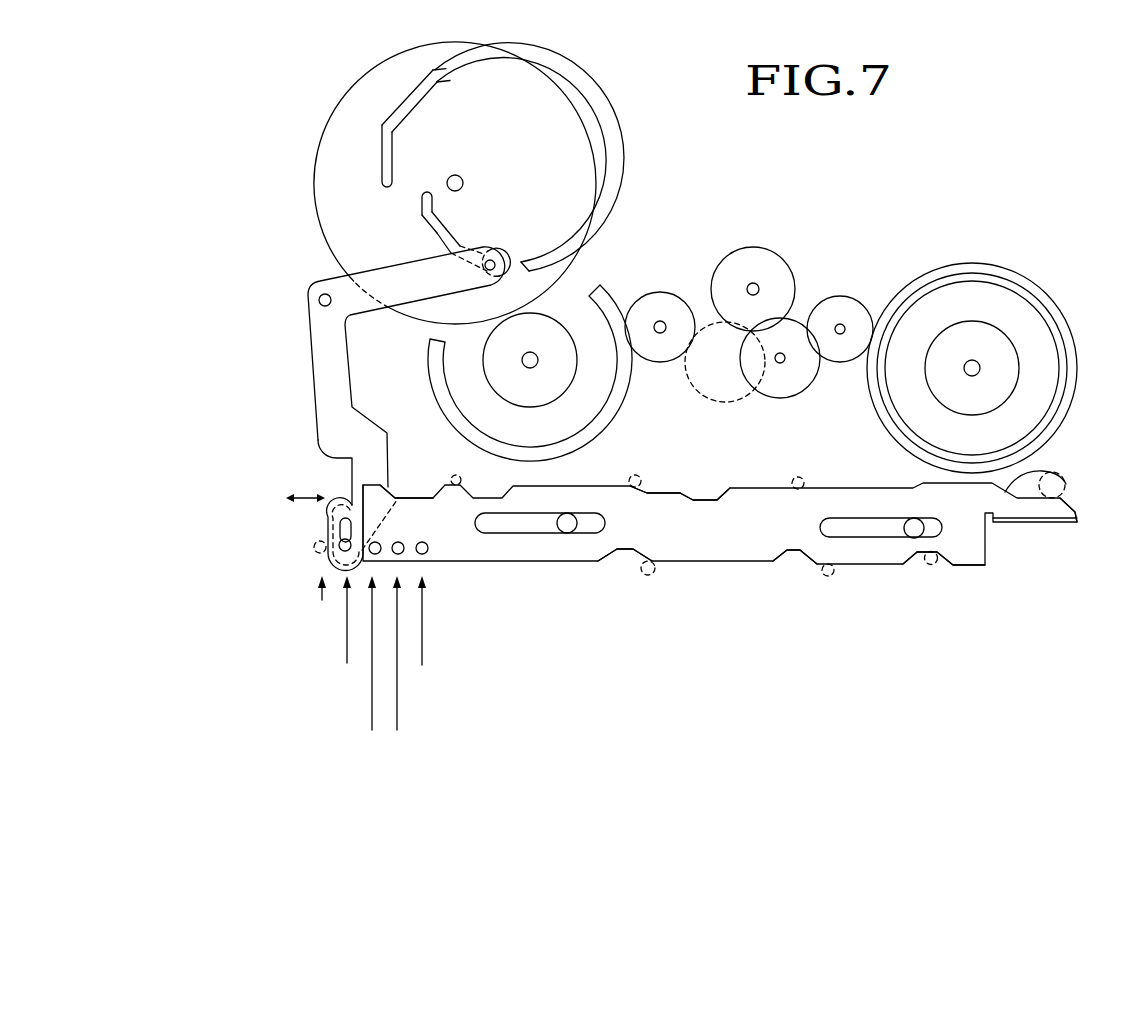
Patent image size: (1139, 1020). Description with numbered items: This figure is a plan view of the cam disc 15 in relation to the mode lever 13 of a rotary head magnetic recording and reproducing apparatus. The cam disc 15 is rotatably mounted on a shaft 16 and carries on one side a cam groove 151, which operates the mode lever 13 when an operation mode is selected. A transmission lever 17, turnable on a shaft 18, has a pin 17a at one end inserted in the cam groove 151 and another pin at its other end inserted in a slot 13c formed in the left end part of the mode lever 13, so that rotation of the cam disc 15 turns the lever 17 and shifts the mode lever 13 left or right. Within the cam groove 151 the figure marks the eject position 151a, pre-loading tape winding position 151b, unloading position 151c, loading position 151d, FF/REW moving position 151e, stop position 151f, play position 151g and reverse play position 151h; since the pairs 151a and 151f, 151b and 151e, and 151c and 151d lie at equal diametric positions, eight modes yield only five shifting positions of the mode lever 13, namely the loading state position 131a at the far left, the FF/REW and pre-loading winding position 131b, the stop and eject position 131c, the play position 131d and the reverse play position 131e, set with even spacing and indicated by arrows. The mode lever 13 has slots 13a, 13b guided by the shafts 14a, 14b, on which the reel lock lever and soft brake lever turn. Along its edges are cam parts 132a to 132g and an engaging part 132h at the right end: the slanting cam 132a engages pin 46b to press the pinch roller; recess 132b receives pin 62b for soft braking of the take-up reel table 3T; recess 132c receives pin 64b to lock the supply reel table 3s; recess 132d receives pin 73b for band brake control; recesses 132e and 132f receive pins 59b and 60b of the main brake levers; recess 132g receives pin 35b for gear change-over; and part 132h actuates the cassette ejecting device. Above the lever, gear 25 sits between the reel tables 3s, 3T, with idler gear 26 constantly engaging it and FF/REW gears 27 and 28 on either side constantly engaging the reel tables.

The cam disc 15 is at (518, 78).
The cam groove 151 is at (563, 122).
The eject position 151a is at (382, 184).
The pre-loading tape winding position 151b is at (385, 127).
The unloading position 151c is at (433, 72).
The loading position 151d is at (522, 268).
The FF/REW moving position 151e is at (503, 252).
The stop position 151f is at (456, 249).
The play position 151g is at (424, 230).
The reverse play position 151h is at (422, 198).
The shaft 16 is at (447, 181).
The lever 17 is at (318, 348).
The pin 17a is at (339, 535).
The shaft 18 is at (319, 300).
The mode lever 13 is at (984, 566).
The slot 13a is at (505, 527).
The slot 13b is at (830, 519).
The slot 13c is at (347, 519).
The shaft 14a is at (567, 530).
The shaft 14b is at (913, 537).
The supply reel table 3s is at (432, 376).
The take-up reel table 3T is at (997, 300).
The gear 25 is at (765, 265).
The idler gear 26 is at (790, 335).
The FF/REW gear 27 is at (657, 349).
The FF/REW gear 28 is at (853, 314).
The engaging pin 35b is at (931, 564).
The pin 46b is at (1065, 483).
The engaging pin 59b is at (650, 575).
The engaging pin 60b is at (828, 576).
The engaging pin 62b is at (798, 477).
The engaging pin 64b is at (641, 479).
The engaging pin 73b is at (452, 476).
The cam part 132a is at (1040, 472).
The cam part 132b is at (733, 493).
The cam part 132c is at (690, 489).
The cam part 132d is at (418, 497).
The cam part 132e is at (618, 550).
The cam part 132f is at (797, 552).
The cam part 132g is at (915, 565).
The engaging part 132h is at (1077, 522).
The loading state position 131a is at (322, 600).
The FF/REW and pre-loading winding position 131b is at (347, 663).
The stop and eject position 131c is at (372, 730).
The play position 131d is at (397, 730).
The reverse play position 131e is at (422, 665).